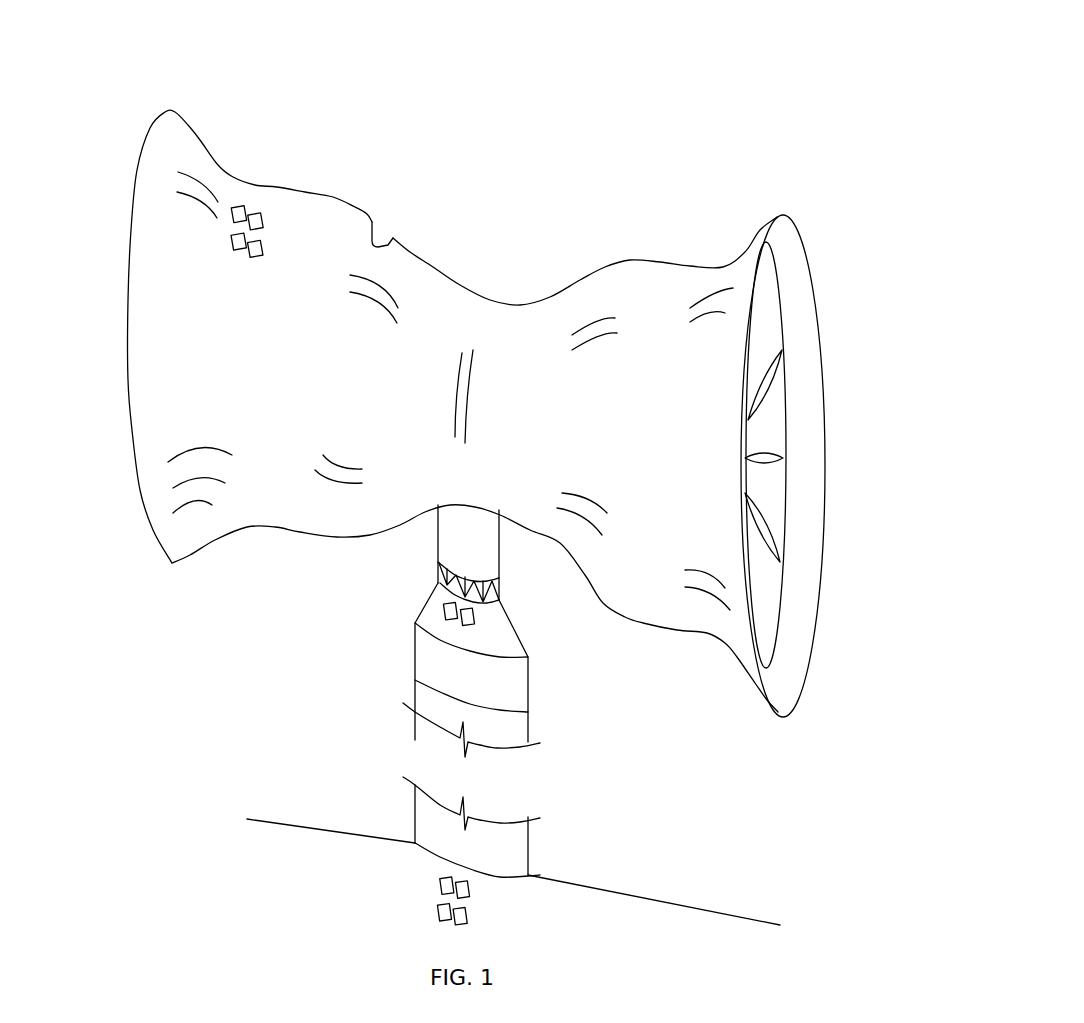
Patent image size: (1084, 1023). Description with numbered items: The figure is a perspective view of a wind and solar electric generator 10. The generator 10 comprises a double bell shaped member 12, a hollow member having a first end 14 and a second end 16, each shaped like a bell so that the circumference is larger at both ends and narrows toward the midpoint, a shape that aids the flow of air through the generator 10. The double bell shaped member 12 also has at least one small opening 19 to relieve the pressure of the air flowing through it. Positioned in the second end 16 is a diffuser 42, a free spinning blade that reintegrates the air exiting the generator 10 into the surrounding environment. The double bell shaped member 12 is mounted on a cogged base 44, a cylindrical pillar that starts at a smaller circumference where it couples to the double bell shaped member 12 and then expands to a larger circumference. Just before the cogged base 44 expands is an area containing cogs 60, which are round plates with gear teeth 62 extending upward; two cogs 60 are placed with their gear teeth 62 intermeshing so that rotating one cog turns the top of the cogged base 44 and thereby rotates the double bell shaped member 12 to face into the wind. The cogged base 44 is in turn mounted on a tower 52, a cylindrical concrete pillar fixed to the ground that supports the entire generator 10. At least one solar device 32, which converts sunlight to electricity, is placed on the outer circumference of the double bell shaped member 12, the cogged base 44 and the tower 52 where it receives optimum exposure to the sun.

The wind and solar electric generator 10 is at (826, 138).
The double bell shaped member 12 is at (712, 278).
The first end 14 is at (143, 480).
The second end 16 is at (800, 493).
The small opening 19 is at (373, 223).
The solar device 32 is at (263, 220).
The diffuser 42 is at (748, 420).
The cogged base 44 is at (500, 630).
The tower 52 is at (513, 850).
The cogs 60 is at (498, 585).
The gear teeth 62 is at (438, 565).